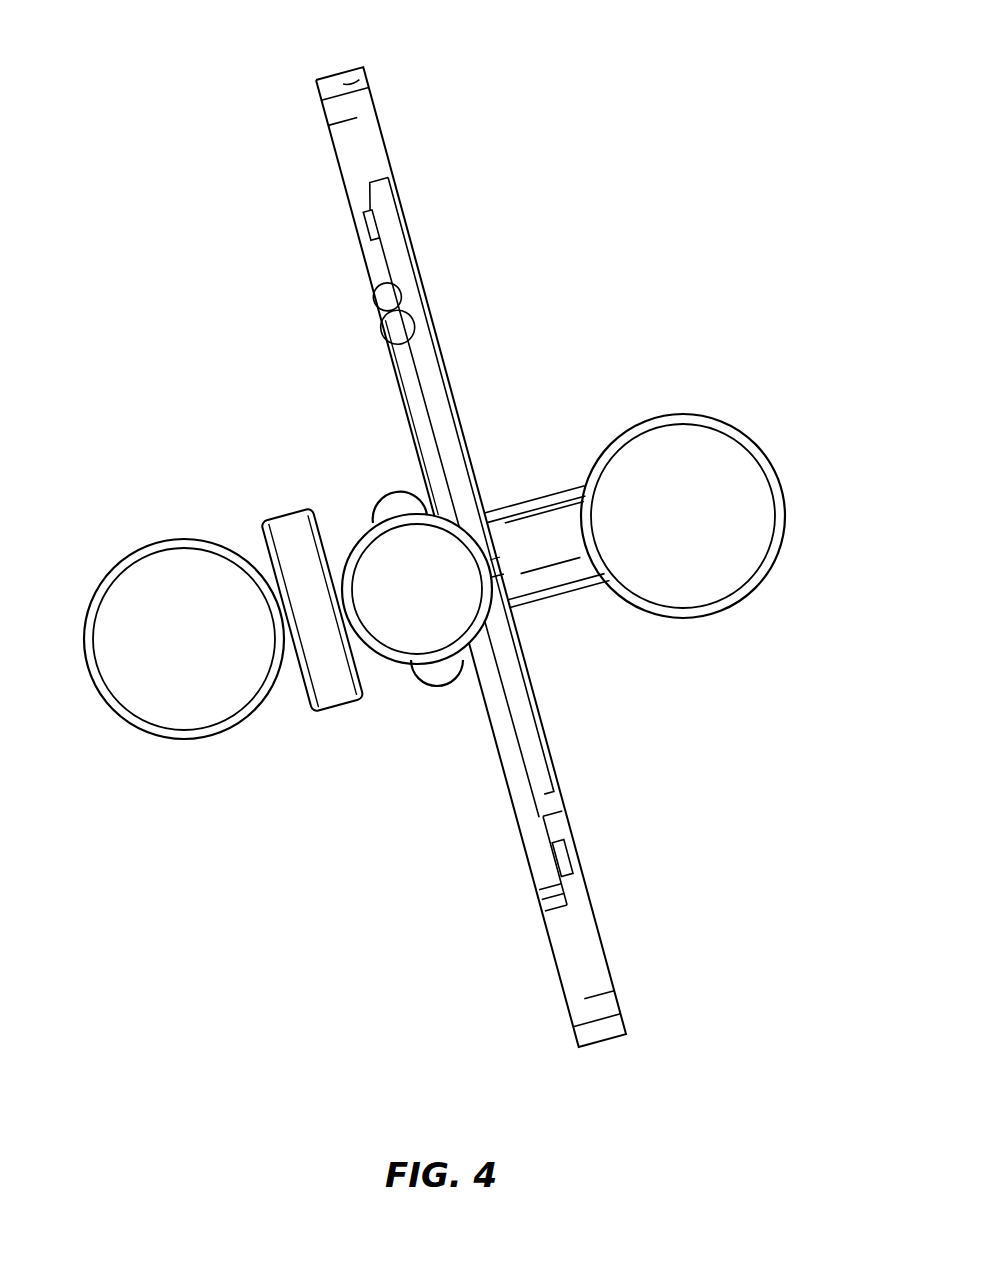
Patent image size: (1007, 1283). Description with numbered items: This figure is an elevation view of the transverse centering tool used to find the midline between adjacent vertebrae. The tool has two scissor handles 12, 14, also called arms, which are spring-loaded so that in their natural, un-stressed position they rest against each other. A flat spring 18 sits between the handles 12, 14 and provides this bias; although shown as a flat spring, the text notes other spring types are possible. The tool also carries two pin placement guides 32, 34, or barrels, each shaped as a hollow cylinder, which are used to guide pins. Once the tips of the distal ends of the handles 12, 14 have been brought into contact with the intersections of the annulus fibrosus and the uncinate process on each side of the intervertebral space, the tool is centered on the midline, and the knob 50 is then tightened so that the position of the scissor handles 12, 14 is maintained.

The scissor handle 12 is at (367, 76).
The scissor handle 14 is at (597, 1007).
The spring 18 is at (425, 438).
The pin placement guide 32 is at (750, 433).
The pin placement guide 34 is at (133, 553).
The knob 50 is at (283, 538).